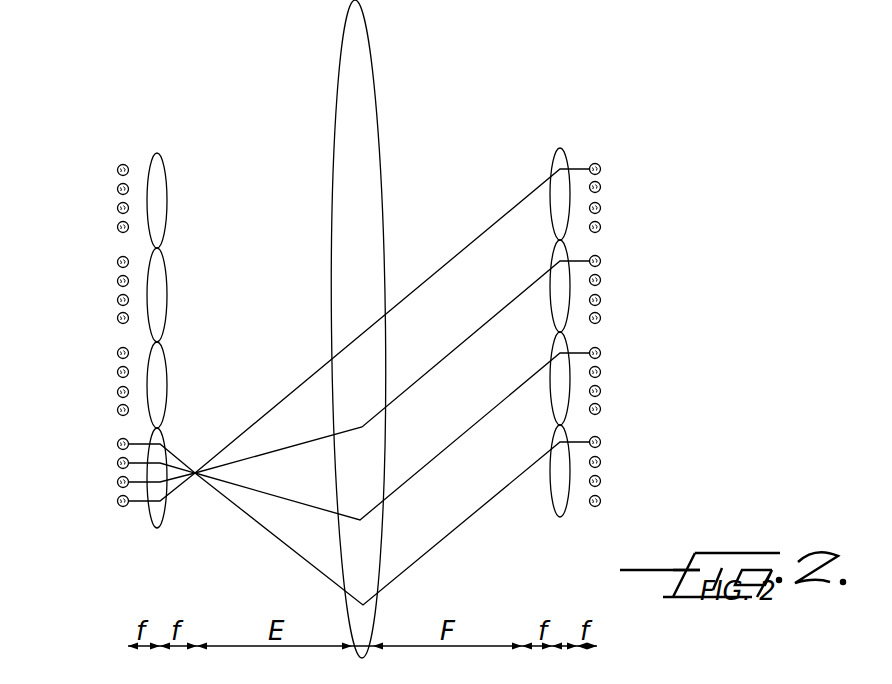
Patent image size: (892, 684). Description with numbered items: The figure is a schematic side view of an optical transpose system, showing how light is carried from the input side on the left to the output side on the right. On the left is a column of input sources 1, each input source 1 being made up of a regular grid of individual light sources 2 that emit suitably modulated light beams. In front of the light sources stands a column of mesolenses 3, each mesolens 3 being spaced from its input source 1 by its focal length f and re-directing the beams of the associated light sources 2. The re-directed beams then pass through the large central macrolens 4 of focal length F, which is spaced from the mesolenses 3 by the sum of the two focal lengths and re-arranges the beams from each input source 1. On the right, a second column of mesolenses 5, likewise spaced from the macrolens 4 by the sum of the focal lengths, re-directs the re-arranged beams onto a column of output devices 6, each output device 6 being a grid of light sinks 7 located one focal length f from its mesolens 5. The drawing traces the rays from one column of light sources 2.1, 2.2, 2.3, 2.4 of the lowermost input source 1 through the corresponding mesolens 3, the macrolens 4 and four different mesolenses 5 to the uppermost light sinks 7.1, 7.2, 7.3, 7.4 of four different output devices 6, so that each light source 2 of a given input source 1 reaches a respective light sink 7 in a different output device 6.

The input source 1 is at (98, 210).
The light source 2 is at (119, 166).
The light source 2.1 is at (120, 506).
The light source 2.2 is at (117, 483).
The light source 2.3 is at (117, 463).
The light source 2.4 is at (117, 444).
The mesolens 3 is at (158, 206).
The macrolens 4 is at (368, 137).
The mesolens 5 is at (558, 221).
The output device 6 is at (612, 215).
The light sink 7 is at (602, 501).
The light sink 7.1 is at (602, 169).
The light sink 7.2 is at (602, 261).
The light sink 7.3 is at (602, 353).
The light sink 7.4 is at (602, 442).